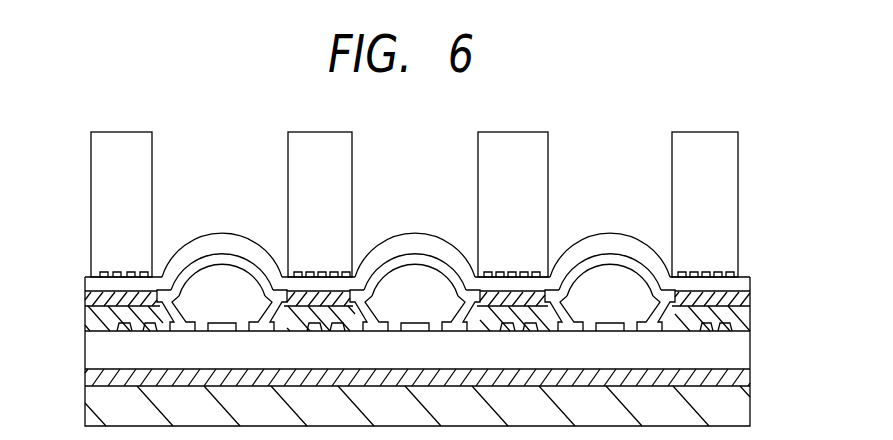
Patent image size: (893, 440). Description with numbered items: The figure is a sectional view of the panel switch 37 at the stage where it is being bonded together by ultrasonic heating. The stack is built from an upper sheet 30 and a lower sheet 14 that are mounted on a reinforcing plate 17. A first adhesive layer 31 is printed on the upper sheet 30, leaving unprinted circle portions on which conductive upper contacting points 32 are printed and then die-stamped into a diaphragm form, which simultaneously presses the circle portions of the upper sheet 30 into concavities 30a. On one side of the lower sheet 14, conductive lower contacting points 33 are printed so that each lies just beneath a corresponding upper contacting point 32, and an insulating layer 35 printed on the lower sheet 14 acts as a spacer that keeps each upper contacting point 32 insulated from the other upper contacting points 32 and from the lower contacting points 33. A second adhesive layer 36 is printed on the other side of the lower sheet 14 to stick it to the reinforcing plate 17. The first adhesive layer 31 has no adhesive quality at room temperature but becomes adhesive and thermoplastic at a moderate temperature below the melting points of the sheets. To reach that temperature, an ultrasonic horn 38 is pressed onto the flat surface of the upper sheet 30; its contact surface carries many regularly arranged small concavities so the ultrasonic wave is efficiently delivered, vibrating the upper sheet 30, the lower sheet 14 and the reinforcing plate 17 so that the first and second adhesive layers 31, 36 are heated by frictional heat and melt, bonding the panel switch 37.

The panel switch 37 is at (66, 276).
The ultrasonic horn 38 is at (152, 168).
The upper sheet 30 is at (737, 283).
The concavities 30a is at (611, 239).
The upper contacting points 32 is at (641, 265).
The lower contacting points 33 is at (598, 292).
The first adhesive layer 31 is at (740, 302).
The insulating layer 35 is at (740, 327).
The lower sheet 14 is at (740, 359).
The second adhesive layer 36 is at (740, 383).
The reinforcing plate 17 is at (735, 416).